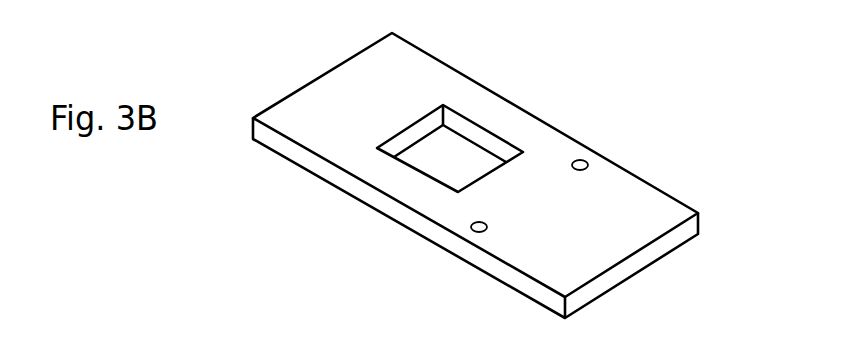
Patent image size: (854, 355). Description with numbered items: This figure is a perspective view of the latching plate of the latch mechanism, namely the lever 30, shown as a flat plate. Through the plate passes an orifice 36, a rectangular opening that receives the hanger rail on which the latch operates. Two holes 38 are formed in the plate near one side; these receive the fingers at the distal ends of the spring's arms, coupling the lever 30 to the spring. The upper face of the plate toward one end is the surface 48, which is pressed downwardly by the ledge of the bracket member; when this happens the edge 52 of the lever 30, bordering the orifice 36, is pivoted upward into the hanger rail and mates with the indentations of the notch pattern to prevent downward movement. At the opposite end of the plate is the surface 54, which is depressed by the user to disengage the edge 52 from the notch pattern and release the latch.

The lever 30 is at (562, 63).
The orifice 36 is at (453, 152).
The holes 38 is at (567, 165).
The surface 48 is at (336, 103).
The edge 52 is at (492, 170).
The surface 54 is at (615, 238).